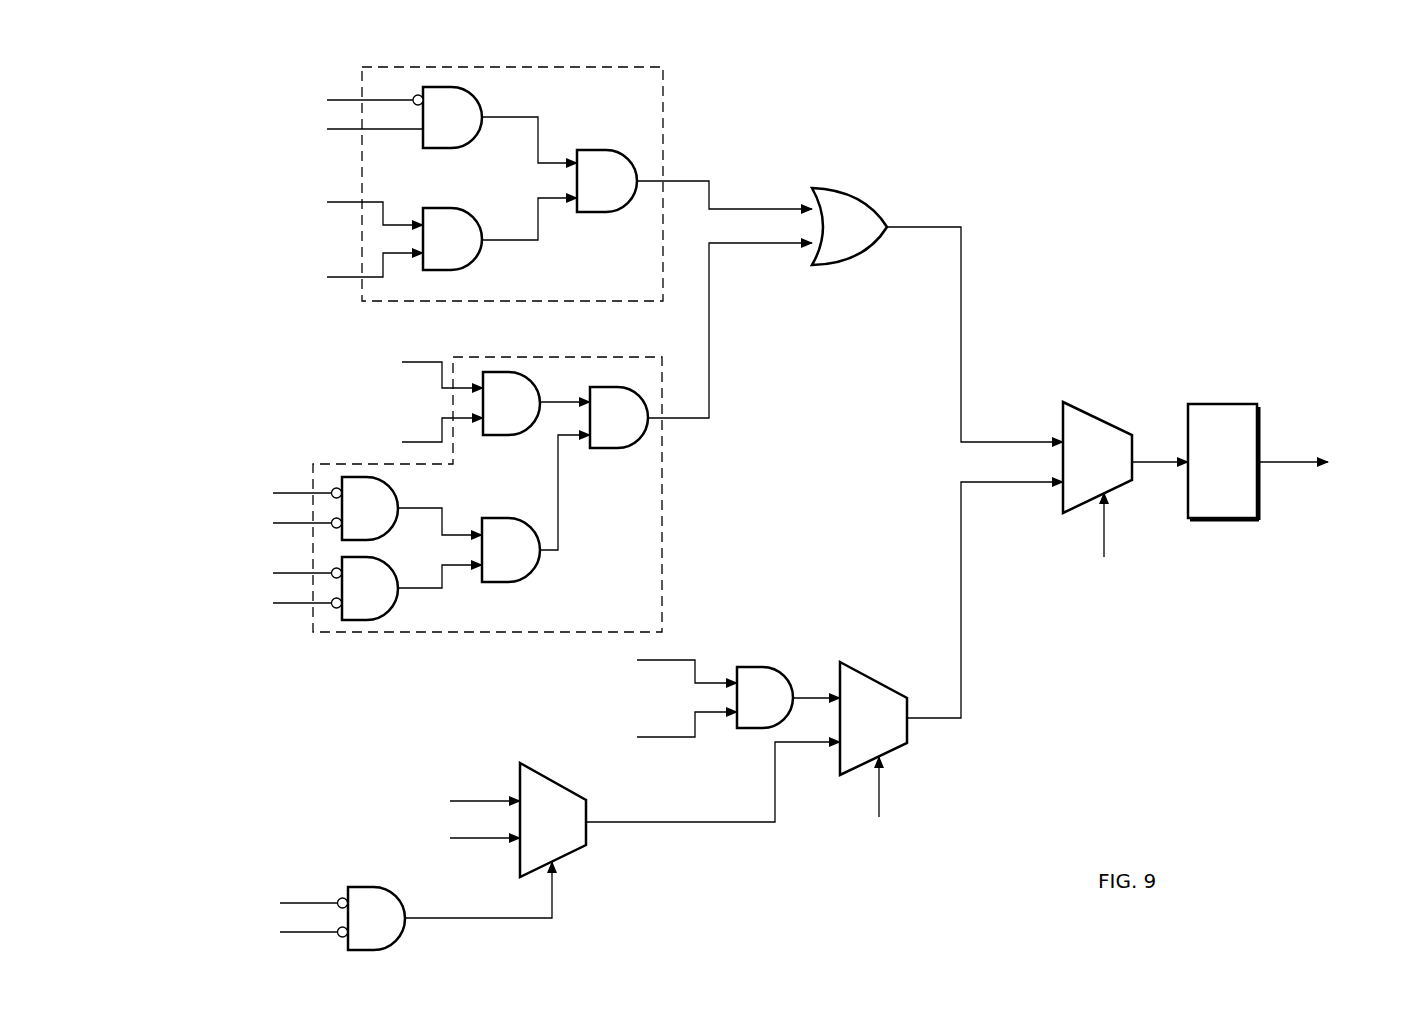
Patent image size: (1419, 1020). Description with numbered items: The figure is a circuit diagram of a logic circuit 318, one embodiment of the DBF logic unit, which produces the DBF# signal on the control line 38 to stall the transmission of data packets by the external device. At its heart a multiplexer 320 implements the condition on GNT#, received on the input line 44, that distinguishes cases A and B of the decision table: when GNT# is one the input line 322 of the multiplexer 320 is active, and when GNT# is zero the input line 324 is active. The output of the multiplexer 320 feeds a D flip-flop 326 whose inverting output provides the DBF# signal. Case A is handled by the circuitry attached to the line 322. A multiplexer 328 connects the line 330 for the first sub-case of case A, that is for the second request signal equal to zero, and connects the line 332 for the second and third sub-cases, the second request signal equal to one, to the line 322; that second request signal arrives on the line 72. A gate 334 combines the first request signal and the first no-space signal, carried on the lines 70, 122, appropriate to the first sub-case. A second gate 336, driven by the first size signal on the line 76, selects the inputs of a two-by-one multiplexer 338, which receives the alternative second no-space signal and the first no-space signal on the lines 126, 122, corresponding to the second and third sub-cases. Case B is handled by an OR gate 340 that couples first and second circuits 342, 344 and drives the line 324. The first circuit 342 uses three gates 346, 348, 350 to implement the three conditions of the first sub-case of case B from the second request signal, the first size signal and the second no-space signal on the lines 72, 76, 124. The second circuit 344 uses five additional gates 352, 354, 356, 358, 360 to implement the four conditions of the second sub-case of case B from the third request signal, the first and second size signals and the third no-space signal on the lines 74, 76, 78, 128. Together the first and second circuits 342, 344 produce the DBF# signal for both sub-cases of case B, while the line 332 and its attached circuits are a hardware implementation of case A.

The logic circuit 318 is at (851, 130).
The first circuit 342 is at (596, 106).
The second circuit 344 is at (595, 598).
The gate 346 is at (587, 192).
The gate 348 is at (433, 128).
The gate 350 is at (433, 250).
The gate 352 is at (599, 429).
The gate 354 is at (491, 414).
The gate 356 is at (491, 561).
The gate 358 is at (351, 519).
The gate 360 is at (351, 599).
The OR gate 340 is at (829, 238).
The multiplexer 320 is at (1090, 474).
The D flip-flop 326 is at (1205, 484).
The multiplexer 328 is at (865, 730).
The gate 334 is at (745, 709).
The second gate 336 is at (357, 929).
The 2×1 multiplexer 338 is at (543, 834).
The input line 324 is at (961, 341).
The input line 322 is at (961, 645).
The line 330 is at (808, 693).
The line 332 is at (808, 745).
The input line 44 is at (1104, 538).
The control line 38 is at (1287, 460).
The line 76 is at (338, 106).
The line 72 is at (338, 195).
The output line 124 is at (338, 280).
The line 74 is at (428, 361).
The output line 128 is at (428, 440).
The line 78 is at (288, 598).
The line 70 is at (668, 662).
The output line 122 is at (668, 740).
The output line 126 is at (483, 799).